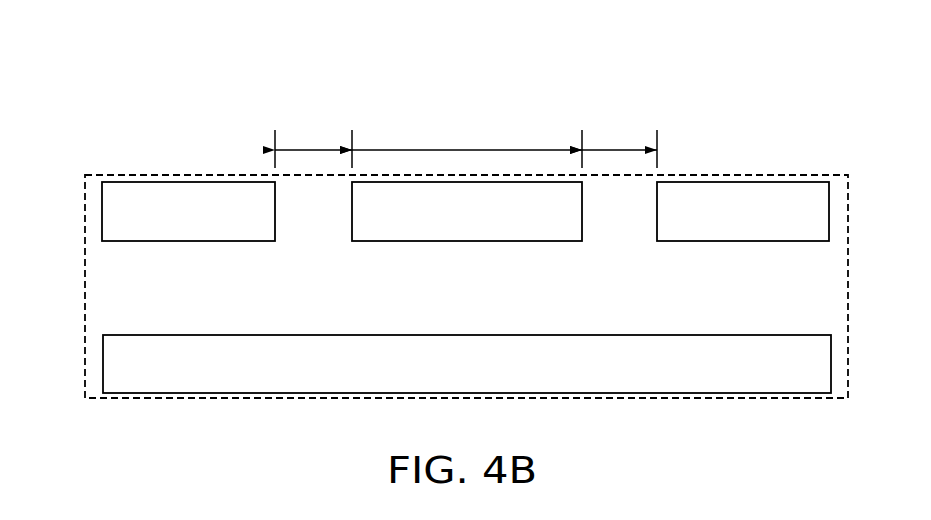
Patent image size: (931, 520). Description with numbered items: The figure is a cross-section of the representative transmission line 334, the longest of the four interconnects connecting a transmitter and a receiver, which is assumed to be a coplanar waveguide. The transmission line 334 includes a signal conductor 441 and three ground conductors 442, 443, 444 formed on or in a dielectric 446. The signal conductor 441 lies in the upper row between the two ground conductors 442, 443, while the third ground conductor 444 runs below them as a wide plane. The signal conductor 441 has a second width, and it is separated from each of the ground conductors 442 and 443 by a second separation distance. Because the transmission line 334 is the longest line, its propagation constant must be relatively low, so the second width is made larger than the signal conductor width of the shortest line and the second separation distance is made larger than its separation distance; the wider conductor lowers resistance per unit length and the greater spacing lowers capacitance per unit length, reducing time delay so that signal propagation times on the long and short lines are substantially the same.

The transmission line 334 is at (482, 51).
The signal conductor 441 is at (430, 223).
The ground conductor 442 is at (180, 223).
The ground conductor 443 is at (715, 223).
The ground conductor 444 is at (295, 378).
The dielectric 446 is at (85, 320).